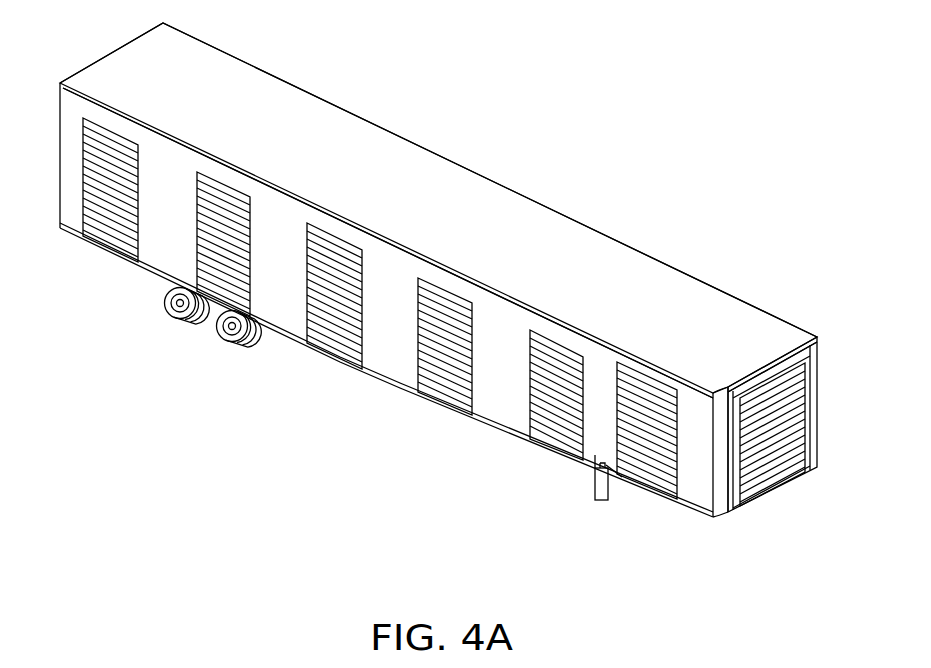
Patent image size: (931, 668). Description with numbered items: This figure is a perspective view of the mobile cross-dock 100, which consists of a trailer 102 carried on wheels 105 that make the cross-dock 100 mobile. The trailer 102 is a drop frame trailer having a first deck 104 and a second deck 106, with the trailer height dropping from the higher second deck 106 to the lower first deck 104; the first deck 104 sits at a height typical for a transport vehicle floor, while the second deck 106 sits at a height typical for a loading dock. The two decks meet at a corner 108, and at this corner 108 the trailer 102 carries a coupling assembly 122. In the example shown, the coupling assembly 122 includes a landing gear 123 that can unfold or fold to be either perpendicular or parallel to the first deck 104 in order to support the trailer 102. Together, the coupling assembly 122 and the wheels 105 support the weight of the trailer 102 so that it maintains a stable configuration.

The mobile cross-dock 100 is at (735, 50).
The trailer 102 is at (527, 197).
The first deck 104 is at (368, 418).
The wheels 105 is at (229, 336).
The second deck 106 is at (716, 582).
The corner 108 is at (657, 537).
The coupling assembly 122 is at (747, 542).
The landing gear 123 is at (601, 503).